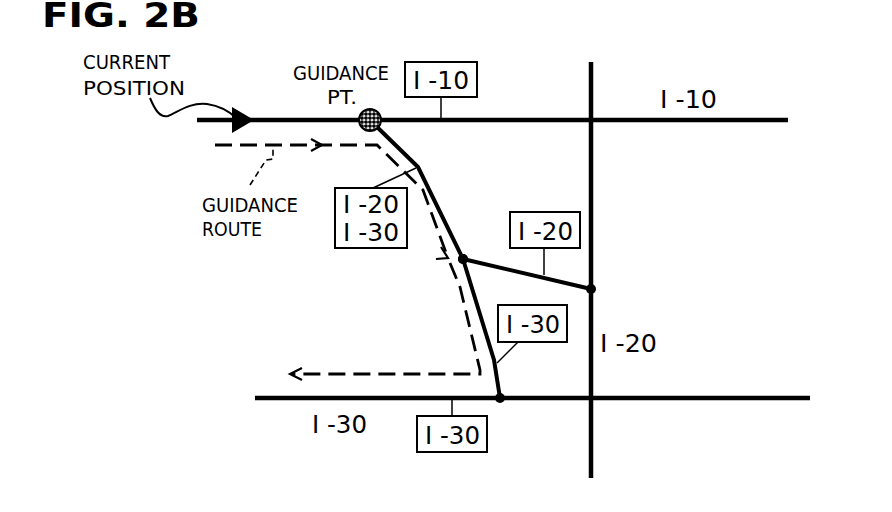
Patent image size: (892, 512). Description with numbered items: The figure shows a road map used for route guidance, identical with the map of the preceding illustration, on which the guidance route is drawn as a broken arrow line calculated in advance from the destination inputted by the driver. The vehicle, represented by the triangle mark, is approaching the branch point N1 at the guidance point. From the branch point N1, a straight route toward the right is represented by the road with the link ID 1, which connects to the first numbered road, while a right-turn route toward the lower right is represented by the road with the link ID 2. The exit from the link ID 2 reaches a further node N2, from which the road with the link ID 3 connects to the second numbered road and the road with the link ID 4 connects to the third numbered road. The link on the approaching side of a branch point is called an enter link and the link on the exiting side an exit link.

The link ID 1 is at (492, 108).
The link ID 2 is at (419, 192).
The link ID 3 is at (527, 265).
The link ID 4 is at (484, 331).
The branch point N1 is at (367, 131).
The intersection node N2 is at (462, 264).